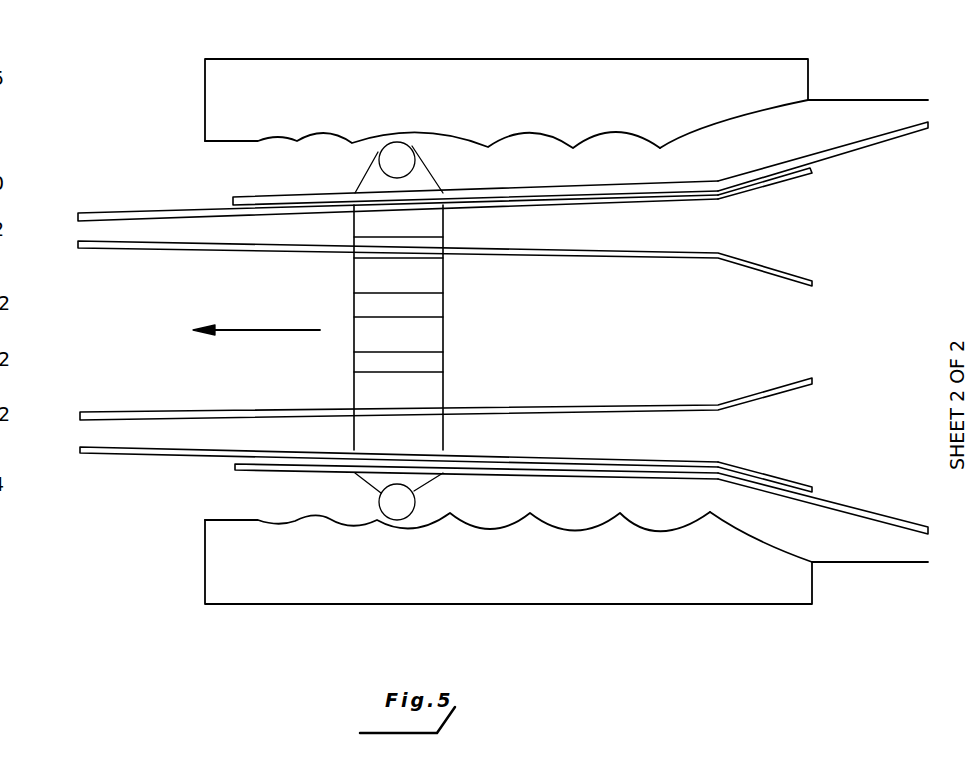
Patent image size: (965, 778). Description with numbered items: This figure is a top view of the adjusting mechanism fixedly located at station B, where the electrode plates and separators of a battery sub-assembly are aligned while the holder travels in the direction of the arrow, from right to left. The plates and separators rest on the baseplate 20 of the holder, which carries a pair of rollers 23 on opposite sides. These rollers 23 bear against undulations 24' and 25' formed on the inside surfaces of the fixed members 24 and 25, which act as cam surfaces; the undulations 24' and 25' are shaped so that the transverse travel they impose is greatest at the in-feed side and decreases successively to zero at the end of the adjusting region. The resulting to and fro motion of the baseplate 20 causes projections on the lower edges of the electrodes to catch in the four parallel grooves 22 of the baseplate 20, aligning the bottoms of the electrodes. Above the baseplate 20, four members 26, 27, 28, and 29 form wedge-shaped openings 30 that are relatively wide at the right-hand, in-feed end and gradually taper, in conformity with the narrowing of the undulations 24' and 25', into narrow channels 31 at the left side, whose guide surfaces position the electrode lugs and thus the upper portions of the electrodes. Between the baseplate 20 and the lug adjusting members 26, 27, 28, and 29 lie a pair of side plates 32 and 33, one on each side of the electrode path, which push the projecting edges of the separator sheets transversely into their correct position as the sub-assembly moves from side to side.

The baseplate 20 is at (448, 392).
The parallel grooves 22 is at (445, 243).
The rollers 23 is at (398, 148).
The fixed member 24 is at (566, 578).
The undulations 24' is at (457, 514).
The fixed member 25 is at (566, 84).
The undulations 25' is at (432, 153).
The lug adjusting member 26 is at (143, 454).
The lug adjusting member 27 is at (136, 410).
The lug adjusting member 28 is at (113, 250).
The lug adjusting member 29 is at (104, 212).
The wedge-shaped openings 30 is at (720, 227).
The narrow channels 31 is at (94, 230).
The side plate 32 is at (233, 459).
The side plate 33 is at (262, 196).